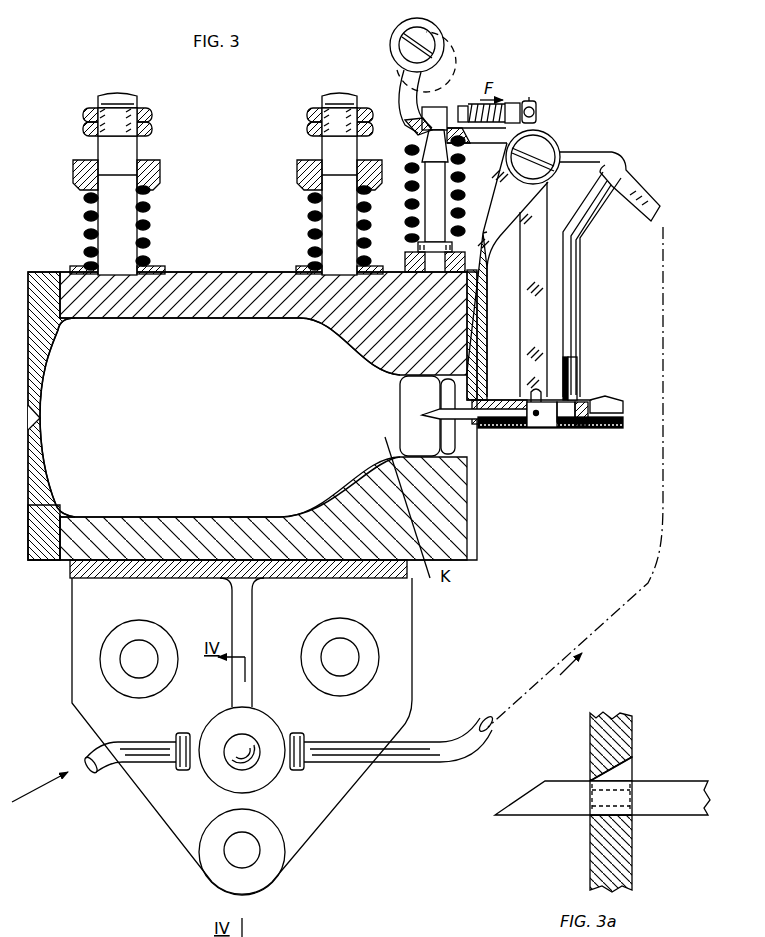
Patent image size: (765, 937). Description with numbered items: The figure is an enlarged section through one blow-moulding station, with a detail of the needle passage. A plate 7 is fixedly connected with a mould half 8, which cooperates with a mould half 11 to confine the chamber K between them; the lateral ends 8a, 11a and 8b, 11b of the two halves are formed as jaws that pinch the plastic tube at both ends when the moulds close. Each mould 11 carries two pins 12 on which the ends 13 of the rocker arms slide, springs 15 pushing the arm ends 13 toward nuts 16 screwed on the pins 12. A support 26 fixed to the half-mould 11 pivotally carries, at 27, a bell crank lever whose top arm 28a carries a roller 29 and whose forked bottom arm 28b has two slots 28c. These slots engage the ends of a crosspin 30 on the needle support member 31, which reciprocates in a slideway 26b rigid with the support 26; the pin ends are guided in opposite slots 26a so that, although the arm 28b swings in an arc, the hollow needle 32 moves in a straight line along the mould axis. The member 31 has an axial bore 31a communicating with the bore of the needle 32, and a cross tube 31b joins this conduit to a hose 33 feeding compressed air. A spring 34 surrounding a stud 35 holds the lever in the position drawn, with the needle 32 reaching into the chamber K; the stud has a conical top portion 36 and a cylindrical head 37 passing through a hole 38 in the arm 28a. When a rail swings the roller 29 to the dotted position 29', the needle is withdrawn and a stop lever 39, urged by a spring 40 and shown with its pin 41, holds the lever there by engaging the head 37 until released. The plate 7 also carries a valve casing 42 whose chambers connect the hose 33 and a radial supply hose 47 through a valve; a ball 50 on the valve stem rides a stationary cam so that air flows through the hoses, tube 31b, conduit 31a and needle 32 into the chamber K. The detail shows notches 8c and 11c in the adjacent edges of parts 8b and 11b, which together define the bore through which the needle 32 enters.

In FIG. 3, the plate 7 is at (393, 666).
In FIG. 3, the mould half 8 is at (320, 522).
In FIG. 3, the lateral end of half mould 8 8a is at (44, 500).
In FIG. 3, the lateral end of half mould 8 8b is at (479, 532).
In FIG. 3A, the lateral end of half mould 8 8b is at (633, 862).
In FIG. 3A, the notch 8c is at (631, 823).
In FIG. 3, the mould half 11 is at (233, 305).
In FIG. 3, the lateral end of half mould 11 11a is at (44, 398).
In FIG. 3, the lateral end of half mould 11 11b is at (472, 340).
In FIG. 3A, the lateral end of half mould 11 11b is at (632, 741).
In FIG. 3A, the notch 11c is at (590, 781).
In FIG. 3, the pin 12 is at (308, 212).
In FIG. 3, the arm end 13 is at (300, 172).
In FIG. 3, the spring 15 is at (88, 240).
In FIG. 3, the nut 16 is at (150, 113).
In FIG. 3, the support 26 is at (483, 248).
In FIG. 3, the slot 26a is at (607, 410).
In FIG. 3, the slideway 26b is at (611, 428).
In FIG. 3, the pivot 27 is at (509, 160).
In FIG. 3, the top arm 28a is at (405, 126).
In FIG. 3, the bottom arm 28b is at (526, 334).
In FIG. 3, the slot 28c is at (534, 432).
In FIG. 3, the roller 29 is at (437, 45).
In FIG. 3, the roller position 29' is at (391, 53).
In FIG. 3, the crosspin 30 is at (531, 425).
In FIG. 3, the needle support member 31 is at (549, 415).
In FIG. 3, the axial bore 31a is at (578, 418).
In FIG. 3, the cross tube 31b is at (571, 380).
In FIG. 3, the hollow needle 32 is at (498, 410).
In FIG. 3A, the hollow needle 32 is at (685, 810).
In FIG. 3, the hose 33 is at (413, 752).
In FIG. 3, the spring 34 is at (430, 221).
In FIG. 3, the stud 35 is at (437, 190).
In FIG. 3, the conical top portion 36 is at (437, 154).
In FIG. 3, the cylindrical head 37 is at (448, 115).
In FIG. 3, the hole 38 is at (426, 130).
In FIG. 3, the stop lever 39 is at (468, 110).
In FIG. 3, the spring 40 is at (510, 104).
In FIG. 3, the adjusting pin 41 is at (533, 100).
In FIG. 3, the valve casing 42 is at (262, 734).
In FIG. 3, the hose 47 is at (119, 752).
In FIG. 3, the ball 50 is at (235, 760).